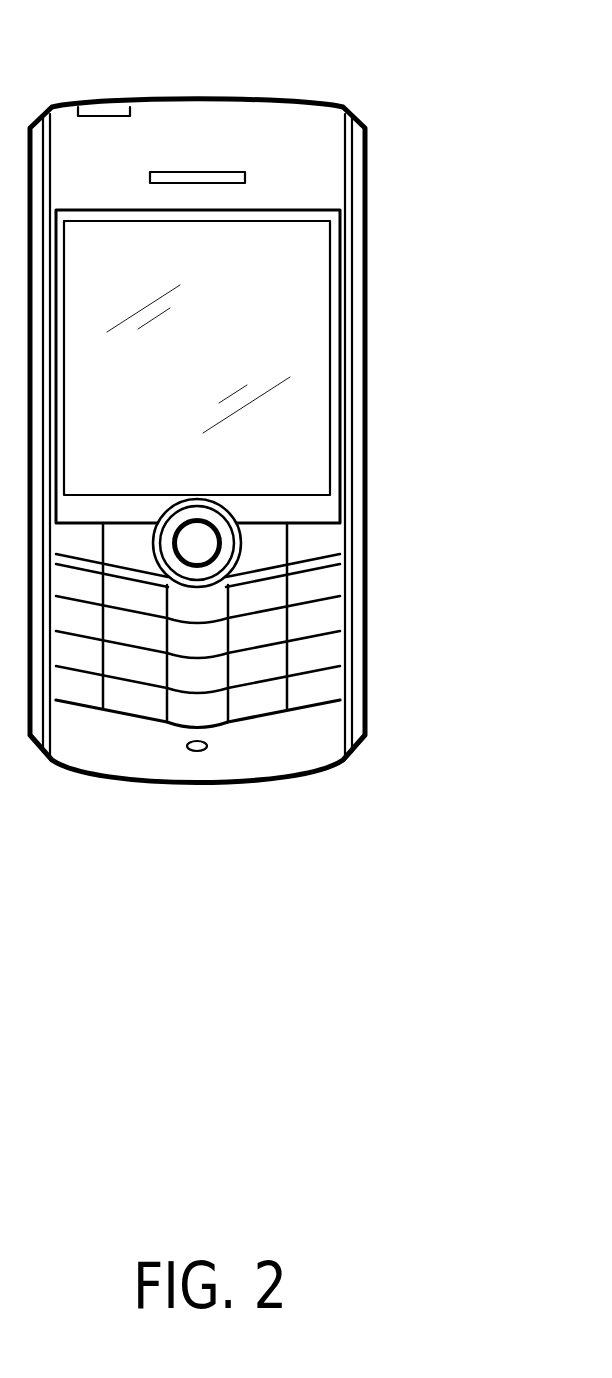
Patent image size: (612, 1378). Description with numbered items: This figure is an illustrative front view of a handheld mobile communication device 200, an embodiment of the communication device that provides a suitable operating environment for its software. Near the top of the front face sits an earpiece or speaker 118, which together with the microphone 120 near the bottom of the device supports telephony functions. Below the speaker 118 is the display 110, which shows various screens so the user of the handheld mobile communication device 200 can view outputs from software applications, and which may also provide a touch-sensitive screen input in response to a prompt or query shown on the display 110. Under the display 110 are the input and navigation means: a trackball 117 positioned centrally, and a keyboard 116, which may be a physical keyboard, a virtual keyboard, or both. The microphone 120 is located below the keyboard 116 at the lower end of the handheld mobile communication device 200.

The display 110 is at (290, 320).
The keyboard 116 is at (277, 740).
The trackball 117 is at (197, 545).
The speaker 118 is at (198, 170).
The microphone 120 is at (197, 752).
The handheld mobile communication device 200 is at (284, 997).